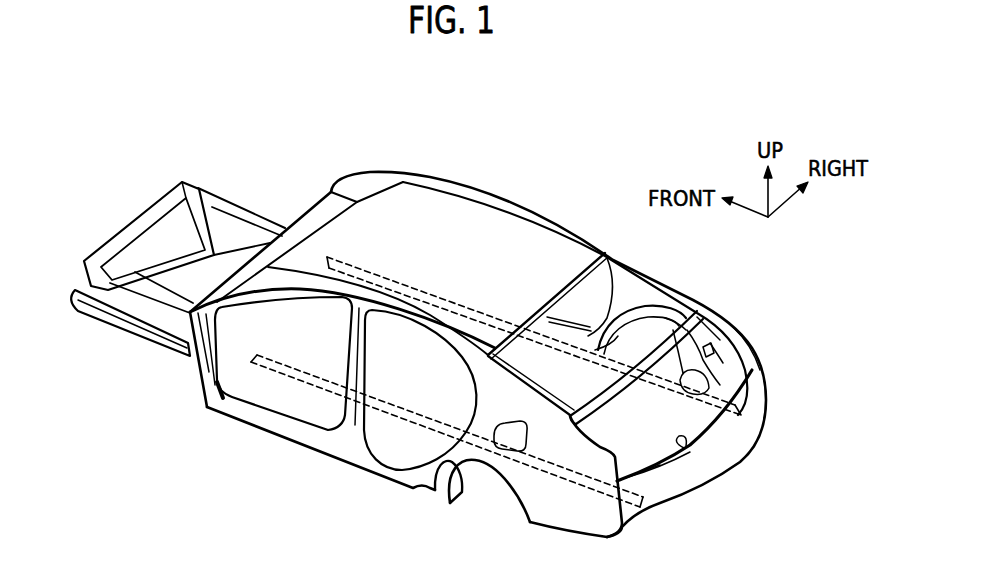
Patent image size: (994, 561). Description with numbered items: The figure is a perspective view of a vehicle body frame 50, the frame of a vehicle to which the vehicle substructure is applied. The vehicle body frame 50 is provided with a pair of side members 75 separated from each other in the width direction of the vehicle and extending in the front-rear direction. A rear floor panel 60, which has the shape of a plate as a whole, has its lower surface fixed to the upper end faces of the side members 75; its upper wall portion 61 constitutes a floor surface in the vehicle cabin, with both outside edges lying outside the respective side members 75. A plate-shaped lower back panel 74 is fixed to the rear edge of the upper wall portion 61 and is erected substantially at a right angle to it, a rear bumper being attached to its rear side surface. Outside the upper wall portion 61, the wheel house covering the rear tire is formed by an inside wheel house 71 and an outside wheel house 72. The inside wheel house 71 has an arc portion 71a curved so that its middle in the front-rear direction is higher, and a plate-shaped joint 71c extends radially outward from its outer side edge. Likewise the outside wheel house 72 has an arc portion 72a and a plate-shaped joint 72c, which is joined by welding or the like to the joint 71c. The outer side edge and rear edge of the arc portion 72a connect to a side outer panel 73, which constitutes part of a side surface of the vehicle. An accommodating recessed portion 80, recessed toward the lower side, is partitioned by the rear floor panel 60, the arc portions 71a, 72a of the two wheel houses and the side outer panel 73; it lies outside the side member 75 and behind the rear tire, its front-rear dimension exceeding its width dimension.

The vehicle body frame 50 is at (474, 162).
The rear floor panel 60 is at (649, 453).
The upper wall portion 61 is at (624, 447).
The inside wheel house 71 is at (620, 333).
The arc portion 71a is at (703, 400).
The joint 71c is at (620, 333).
The outside wheel house 72 is at (645, 307).
The arc portion 72a is at (666, 318).
The joint 72c is at (720, 340).
The side outer panel 73 is at (737, 363).
The lower back panel 74 is at (684, 448).
The side members 75 is at (482, 313).
The accommodating recessed portion 80 is at (737, 384).